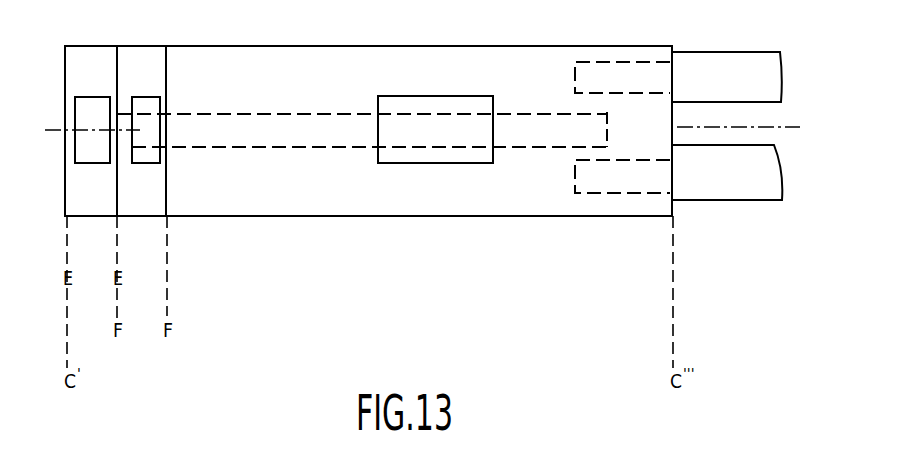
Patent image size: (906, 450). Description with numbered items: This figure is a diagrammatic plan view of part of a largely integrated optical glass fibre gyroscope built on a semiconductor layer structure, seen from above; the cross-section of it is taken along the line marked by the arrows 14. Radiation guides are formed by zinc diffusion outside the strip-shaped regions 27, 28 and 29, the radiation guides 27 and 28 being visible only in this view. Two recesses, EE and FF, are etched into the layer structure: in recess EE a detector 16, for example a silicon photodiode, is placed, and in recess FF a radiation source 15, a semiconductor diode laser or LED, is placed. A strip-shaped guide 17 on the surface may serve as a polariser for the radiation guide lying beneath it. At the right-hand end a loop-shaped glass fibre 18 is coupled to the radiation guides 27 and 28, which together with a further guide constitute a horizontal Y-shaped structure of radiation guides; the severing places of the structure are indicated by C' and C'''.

The section line XIV—XIV 14 is at (52, 130).
The radiation source 15 is at (138, 105).
The detector 16 is at (93, 108).
The strip-shaped guide 17 is at (430, 96).
The loop-shaped glass fibre 18 is at (713, 162).
The radiation guide 27 is at (635, 160).
The radiation guide 28 is at (600, 61).
The strip-shaped region 29 is at (511, 114).